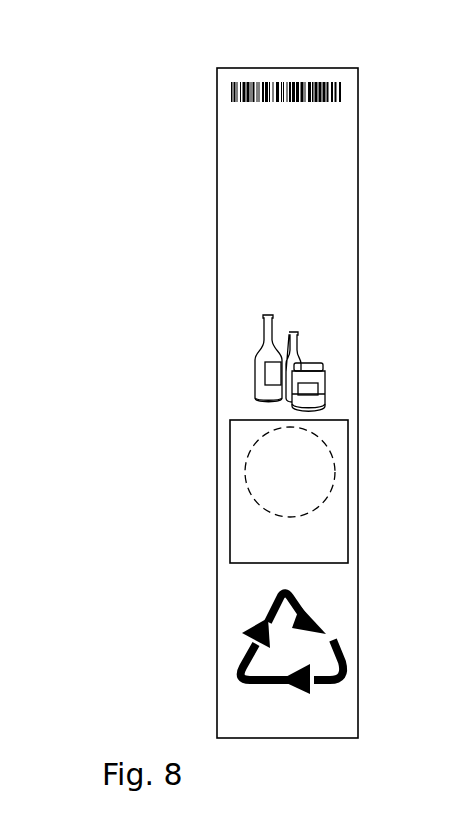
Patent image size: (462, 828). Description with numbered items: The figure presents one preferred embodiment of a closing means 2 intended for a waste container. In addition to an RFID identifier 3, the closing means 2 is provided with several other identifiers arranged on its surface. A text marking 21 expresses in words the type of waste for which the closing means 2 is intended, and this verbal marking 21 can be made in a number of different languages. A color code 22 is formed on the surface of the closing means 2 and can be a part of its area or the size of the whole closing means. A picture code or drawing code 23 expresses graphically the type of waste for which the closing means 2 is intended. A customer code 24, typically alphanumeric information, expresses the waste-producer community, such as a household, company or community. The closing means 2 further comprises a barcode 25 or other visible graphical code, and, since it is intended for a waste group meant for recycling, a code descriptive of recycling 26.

The closing means 2 is at (347, 222).
The RFID identifier 3 is at (247, 481).
The text marking 21 is at (295, 240).
The color code 22 is at (335, 307).
The picture code or drawing code 23 is at (325, 388).
The customer code 24 is at (283, 728).
The barcode 25 is at (288, 80).
The code descriptive of recycling 26 is at (323, 620).